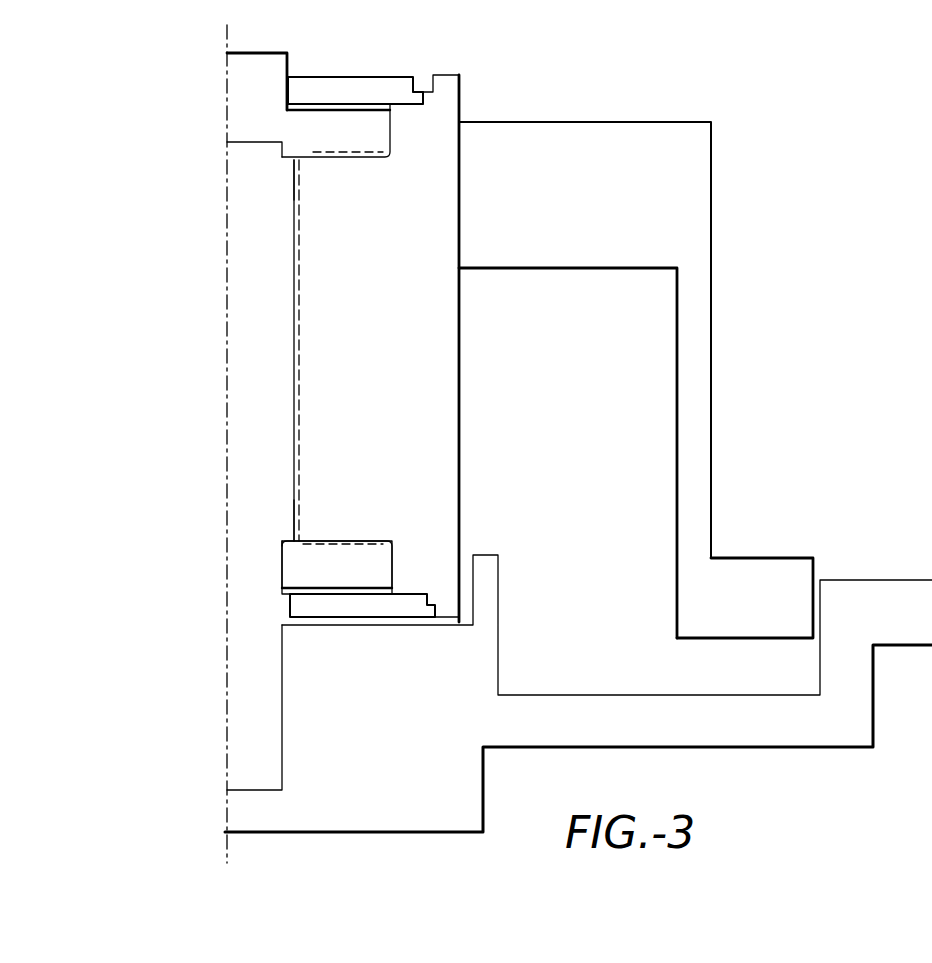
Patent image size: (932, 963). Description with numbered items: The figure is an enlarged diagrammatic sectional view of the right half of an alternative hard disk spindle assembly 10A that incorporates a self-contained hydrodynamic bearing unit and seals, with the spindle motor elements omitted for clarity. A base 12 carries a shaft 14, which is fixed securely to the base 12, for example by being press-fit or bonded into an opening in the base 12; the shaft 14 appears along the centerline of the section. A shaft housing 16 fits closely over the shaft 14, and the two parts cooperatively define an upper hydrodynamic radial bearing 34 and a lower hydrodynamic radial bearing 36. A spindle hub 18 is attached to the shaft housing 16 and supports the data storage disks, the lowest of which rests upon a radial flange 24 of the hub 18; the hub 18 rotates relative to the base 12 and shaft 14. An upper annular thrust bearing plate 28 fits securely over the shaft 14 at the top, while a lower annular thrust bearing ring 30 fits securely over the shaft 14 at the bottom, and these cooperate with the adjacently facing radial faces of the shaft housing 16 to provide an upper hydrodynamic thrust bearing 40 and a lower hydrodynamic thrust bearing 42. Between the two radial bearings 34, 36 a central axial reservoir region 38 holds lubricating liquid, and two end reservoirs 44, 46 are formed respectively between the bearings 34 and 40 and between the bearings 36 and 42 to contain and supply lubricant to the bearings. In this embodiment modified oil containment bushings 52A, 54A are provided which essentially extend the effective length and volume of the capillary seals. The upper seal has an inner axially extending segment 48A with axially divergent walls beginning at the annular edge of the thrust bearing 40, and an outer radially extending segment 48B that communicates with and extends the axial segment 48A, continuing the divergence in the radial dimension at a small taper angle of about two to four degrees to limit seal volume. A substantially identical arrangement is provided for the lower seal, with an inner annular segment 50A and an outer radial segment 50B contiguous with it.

The spindle assembly 10A is at (178, 686).
The base 12 is at (261, 816).
The shaft 14 is at (253, 412).
The shaft housing 16 is at (384, 346).
The spindle hub 18 is at (598, 145).
The radial flange 24 is at (752, 585).
The upper annular thrust bearing plate 28 is at (250, 80).
The lower annular thrust bearing ring 30 is at (302, 562).
The hydrodynamic radial bearing 34 is at (290, 224).
The hydrodynamic radial bearing 36 is at (267, 463).
The central axial reservoir region 38 is at (293, 347).
The hydrodynamic thrust bearing 40 is at (355, 158).
The hydrodynamic thrust bearing 42 is at (372, 540).
The end reservoir 44 is at (297, 162).
The end reservoir 46 is at (295, 540).
The inner axially extending segment 48A is at (392, 122).
The outer radially extending segment 48B is at (328, 104).
The inner annular segment 50A is at (392, 573).
The outer radial segment 50B is at (363, 594).
The oil containment bushing 52A is at (377, 90).
The oil containment bushing 54A is at (387, 612).